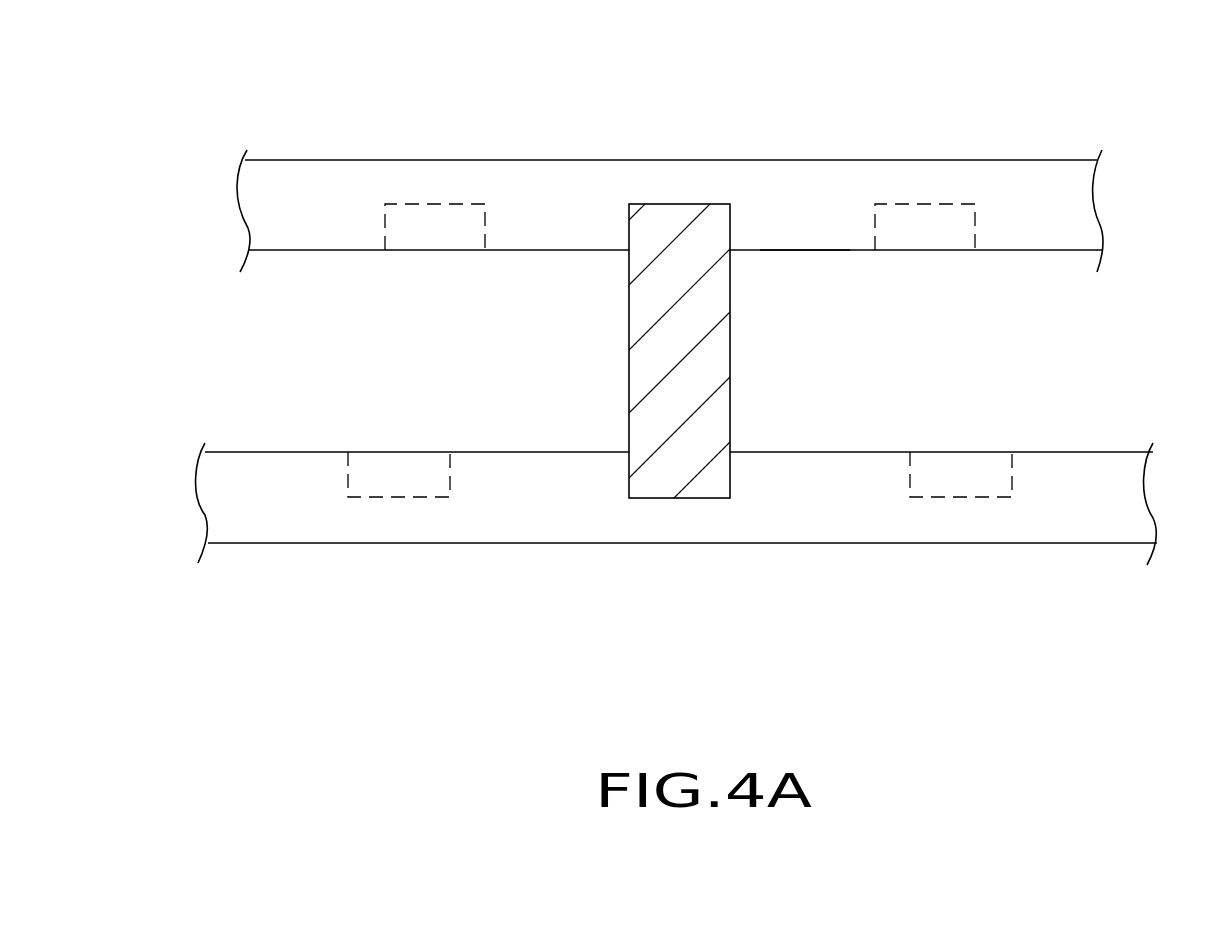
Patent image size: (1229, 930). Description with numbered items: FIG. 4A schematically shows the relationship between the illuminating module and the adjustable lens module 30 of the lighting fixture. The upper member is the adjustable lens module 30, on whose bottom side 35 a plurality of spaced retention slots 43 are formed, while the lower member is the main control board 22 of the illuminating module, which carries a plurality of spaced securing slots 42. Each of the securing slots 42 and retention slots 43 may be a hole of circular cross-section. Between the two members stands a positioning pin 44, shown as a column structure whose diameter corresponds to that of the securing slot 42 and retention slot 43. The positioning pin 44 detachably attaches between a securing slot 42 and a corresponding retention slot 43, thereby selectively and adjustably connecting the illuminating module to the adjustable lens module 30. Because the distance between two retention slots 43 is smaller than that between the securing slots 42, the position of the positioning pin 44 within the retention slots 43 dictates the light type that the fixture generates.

The adjustable lens module 30 is at (558, 188).
The main control board 22 is at (1038, 525).
The positioning pin 44 is at (707, 297).
The retention slot 43 is at (428, 257).
The securing slot 42 is at (957, 460).
The bottom side 35 is at (803, 260).